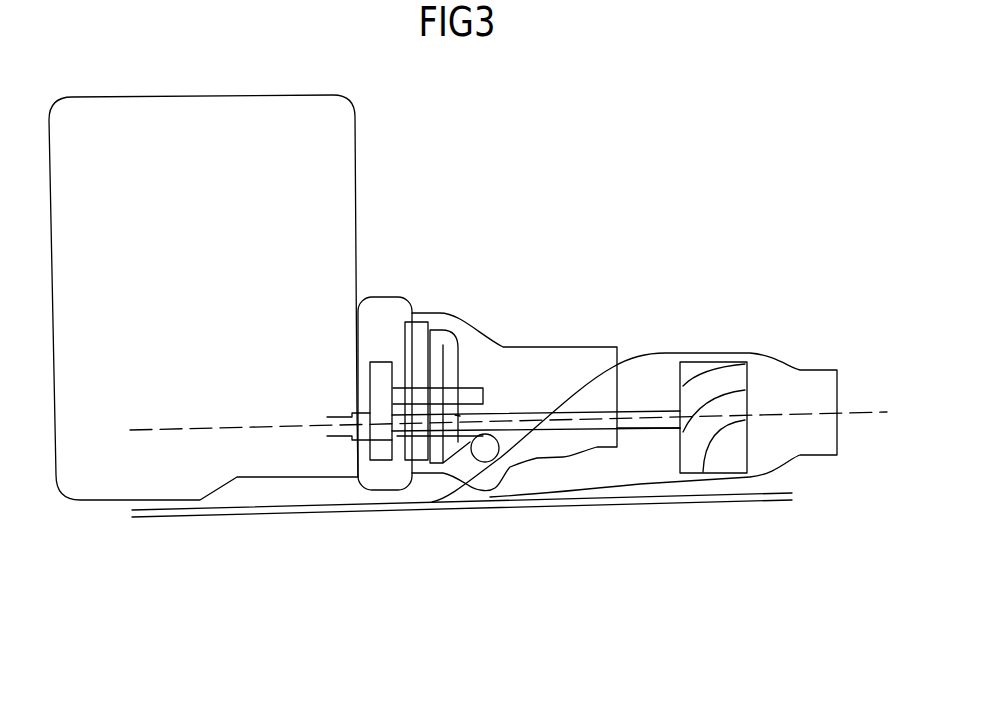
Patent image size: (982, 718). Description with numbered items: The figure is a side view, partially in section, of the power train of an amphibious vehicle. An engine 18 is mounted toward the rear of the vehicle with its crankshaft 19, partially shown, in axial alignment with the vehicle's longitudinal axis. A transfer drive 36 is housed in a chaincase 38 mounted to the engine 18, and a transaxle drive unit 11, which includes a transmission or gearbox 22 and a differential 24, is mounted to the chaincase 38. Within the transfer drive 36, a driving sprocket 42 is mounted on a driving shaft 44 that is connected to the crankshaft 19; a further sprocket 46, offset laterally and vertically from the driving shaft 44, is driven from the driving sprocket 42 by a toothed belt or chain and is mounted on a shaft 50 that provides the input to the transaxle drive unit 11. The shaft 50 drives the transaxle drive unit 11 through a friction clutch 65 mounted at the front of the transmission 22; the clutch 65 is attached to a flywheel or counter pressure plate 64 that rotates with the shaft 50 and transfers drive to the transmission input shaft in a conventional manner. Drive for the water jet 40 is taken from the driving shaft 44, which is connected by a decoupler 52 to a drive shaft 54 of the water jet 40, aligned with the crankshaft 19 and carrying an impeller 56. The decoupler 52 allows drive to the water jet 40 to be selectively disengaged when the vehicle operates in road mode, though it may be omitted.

The transaxle drive unit 11 is at (513, 290).
The engine 18 is at (195, 176).
The crankshaft 19 is at (348, 433).
The transmission 22 is at (550, 355).
The differential 24 is at (455, 415).
The transfer drive 36 is at (384, 283).
The chaincase 38 is at (391, 312).
The water jet 40 is at (657, 351).
The driving sprocket 42 is at (381, 452).
The driving shaft 44 is at (410, 430).
The further sprocket 46 is at (380, 398).
The shaft 50 is at (398, 392).
The decoupler 52 is at (485, 448).
The drive shaft 54 is at (643, 425).
The impeller 56 is at (730, 382).
The flywheel 64 is at (418, 328).
The friction clutch 65 is at (446, 340).